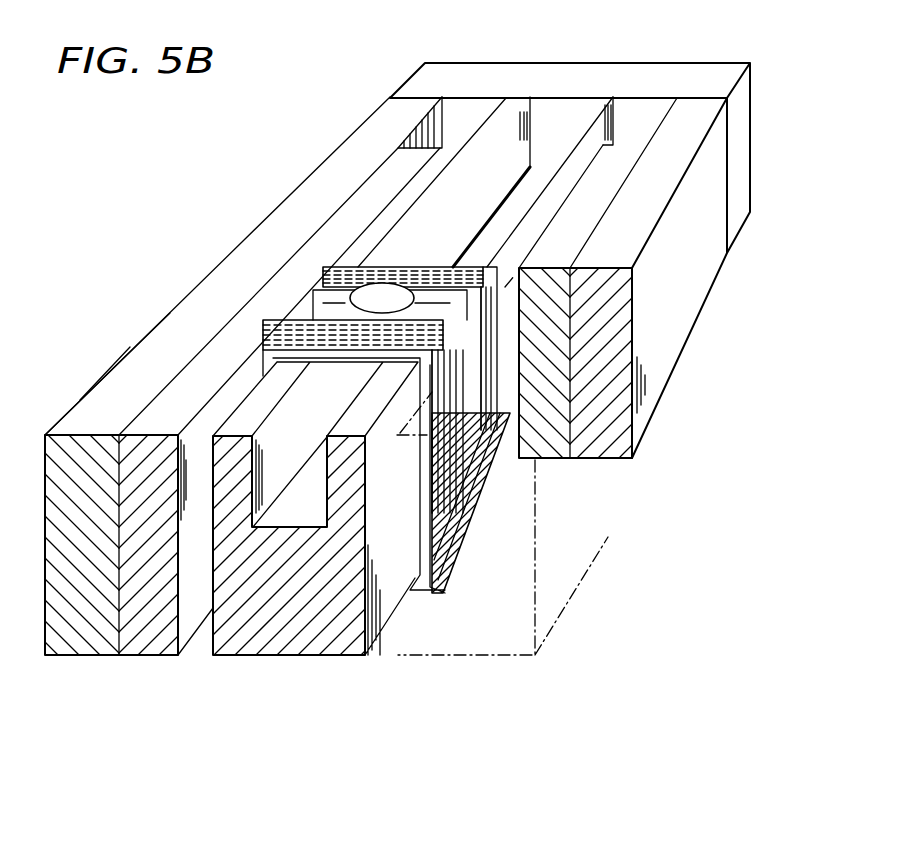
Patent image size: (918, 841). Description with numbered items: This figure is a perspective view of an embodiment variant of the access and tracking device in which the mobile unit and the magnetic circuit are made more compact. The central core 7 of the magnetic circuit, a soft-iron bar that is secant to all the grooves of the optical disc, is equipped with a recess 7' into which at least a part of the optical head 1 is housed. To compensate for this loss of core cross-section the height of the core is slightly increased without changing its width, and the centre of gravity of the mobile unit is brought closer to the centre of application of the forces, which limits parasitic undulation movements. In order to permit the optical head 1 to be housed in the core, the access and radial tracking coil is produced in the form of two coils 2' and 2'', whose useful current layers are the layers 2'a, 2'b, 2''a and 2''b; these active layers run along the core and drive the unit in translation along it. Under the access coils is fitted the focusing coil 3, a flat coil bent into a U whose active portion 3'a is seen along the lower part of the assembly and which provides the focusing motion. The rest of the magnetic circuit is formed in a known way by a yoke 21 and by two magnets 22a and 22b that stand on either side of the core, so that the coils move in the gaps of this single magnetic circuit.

The optical head 1 is at (370, 297).
The first coil 2' is at (380, 286).
The second coil 2'' is at (274, 399).
The useful current layer 2'a is at (623, 358).
The useful current layer 2''a is at (588, 431).
The useful current layer 2'b is at (131, 334).
The useful current layer 2''b is at (142, 372).
The focusing coil 3 is at (536, 503).
The active portion 3'a is at (450, 502).
The central core 7 is at (413, 409).
The recess 7' is at (290, 482).
The yoke 21 is at (706, 303).
The magnet 22a is at (557, 458).
The magnet 22b is at (160, 657).